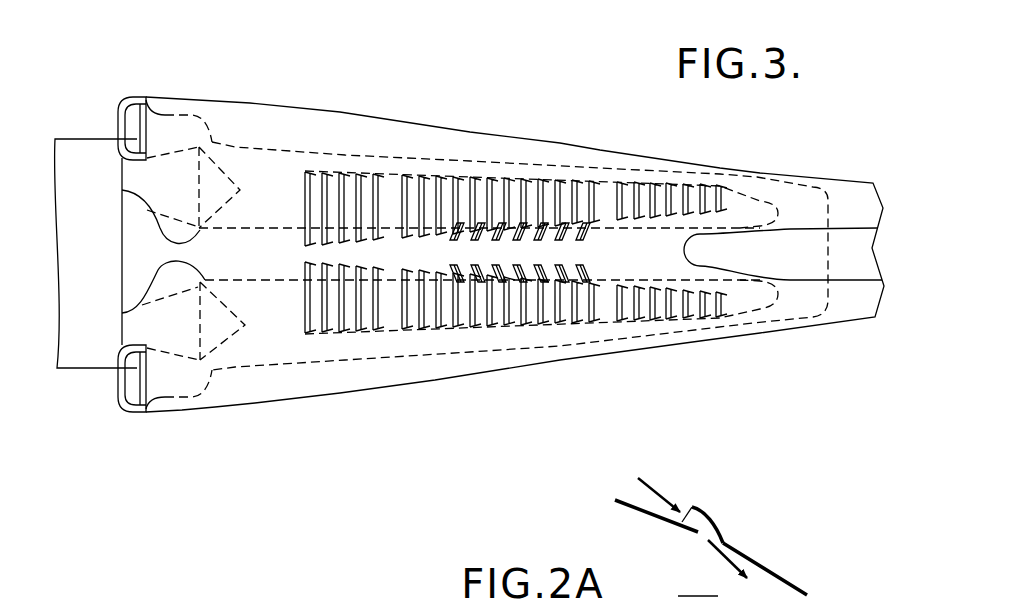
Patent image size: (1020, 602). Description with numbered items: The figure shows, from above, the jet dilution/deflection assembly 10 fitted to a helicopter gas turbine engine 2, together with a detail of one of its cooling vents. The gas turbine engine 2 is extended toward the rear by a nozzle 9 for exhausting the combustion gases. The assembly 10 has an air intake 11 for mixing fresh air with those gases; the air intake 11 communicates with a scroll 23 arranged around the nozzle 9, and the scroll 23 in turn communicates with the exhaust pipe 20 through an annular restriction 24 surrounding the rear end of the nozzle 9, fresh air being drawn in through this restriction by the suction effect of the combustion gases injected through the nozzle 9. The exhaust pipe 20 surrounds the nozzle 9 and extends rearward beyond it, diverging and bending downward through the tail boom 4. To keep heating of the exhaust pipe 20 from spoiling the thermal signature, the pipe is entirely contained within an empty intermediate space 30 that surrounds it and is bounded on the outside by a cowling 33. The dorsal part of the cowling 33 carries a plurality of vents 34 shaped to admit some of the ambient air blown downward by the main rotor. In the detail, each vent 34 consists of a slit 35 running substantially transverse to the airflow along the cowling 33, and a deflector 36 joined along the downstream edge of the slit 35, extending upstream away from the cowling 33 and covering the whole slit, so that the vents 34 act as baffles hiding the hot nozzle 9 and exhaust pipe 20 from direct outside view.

In FIG. 3, the gas turbine engine 2 is at (95, 160).
In FIG. 3, the tail boom 4 is at (843, 294).
In FIG. 3, the nozzle 9 is at (168, 183).
In FIG. 3, the jet dilution/deflection assembly 10 is at (416, 122).
In FIG. 3, the air intake 11 is at (132, 122).
In FIG. 3, the exhaust pipe 20 is at (288, 188).
In FIG. 3, the scroll 23 is at (165, 127).
In FIG. 3, the annular restriction 24 is at (222, 253).
In FIG. 3, the intermediate space 30 is at (257, 262).
In FIG. 2A, the intermediate space 30 is at (698, 583).
In FIG. 3, the cowling 33 is at (497, 135).
In FIG. 2A, the cowling 33 is at (787, 580).
In FIG. 3, the vent 34 is at (588, 182).
In FIG. 2A, the vent 34 is at (718, 520).
In FIG. 2A, the slit 35 is at (700, 538).
In FIG. 2A, the deflector 36 is at (702, 508).